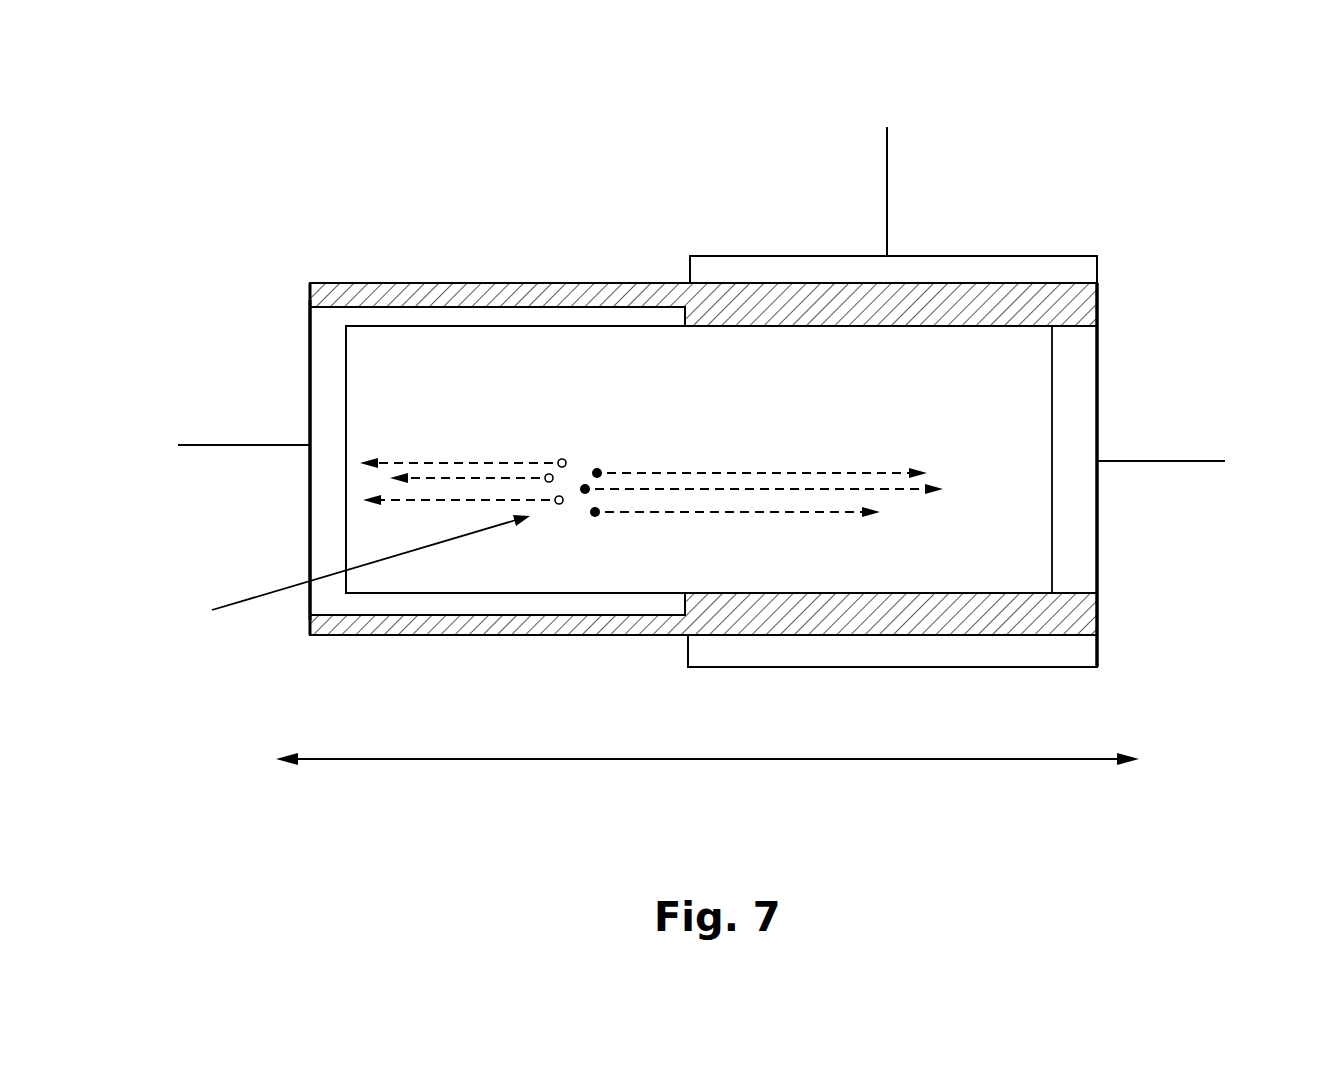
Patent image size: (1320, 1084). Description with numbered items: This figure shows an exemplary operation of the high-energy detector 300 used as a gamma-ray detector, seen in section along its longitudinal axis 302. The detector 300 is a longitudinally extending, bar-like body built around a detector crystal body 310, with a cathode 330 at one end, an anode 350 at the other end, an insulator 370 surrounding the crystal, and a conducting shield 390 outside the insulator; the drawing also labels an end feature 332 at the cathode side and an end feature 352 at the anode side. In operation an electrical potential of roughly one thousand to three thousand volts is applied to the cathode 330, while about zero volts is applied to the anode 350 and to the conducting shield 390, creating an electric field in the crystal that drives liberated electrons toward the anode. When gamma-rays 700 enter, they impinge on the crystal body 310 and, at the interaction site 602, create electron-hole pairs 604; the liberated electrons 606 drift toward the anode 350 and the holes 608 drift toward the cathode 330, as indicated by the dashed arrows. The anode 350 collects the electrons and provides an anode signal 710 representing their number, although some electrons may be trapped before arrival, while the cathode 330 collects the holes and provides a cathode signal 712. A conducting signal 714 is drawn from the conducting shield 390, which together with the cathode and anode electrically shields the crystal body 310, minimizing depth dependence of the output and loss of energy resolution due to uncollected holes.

The high-energy detector 300 is at (419, 170).
The longitudinal axis 302 is at (701, 760).
The detector crystal body 310 is at (889, 389).
The cathode 330 is at (320, 326).
The cathode end wall 332 is at (284, 378).
The anode 350 is at (1080, 362).
The anode end wall 352 is at (1126, 538).
The insulator 370 is at (1083, 305).
The conducting shield 390 is at (1087, 264).
The interaction site 602 is at (587, 426).
The electron-hole pairs 604 is at (577, 508).
The electrons 606 is at (616, 535).
The holes 608 is at (554, 443).
The gamma-rays 700 is at (272, 612).
The anode signal 710 is at (1170, 462).
The cathode signal 712 is at (238, 445).
The conducting signal lead 714 is at (887, 212).